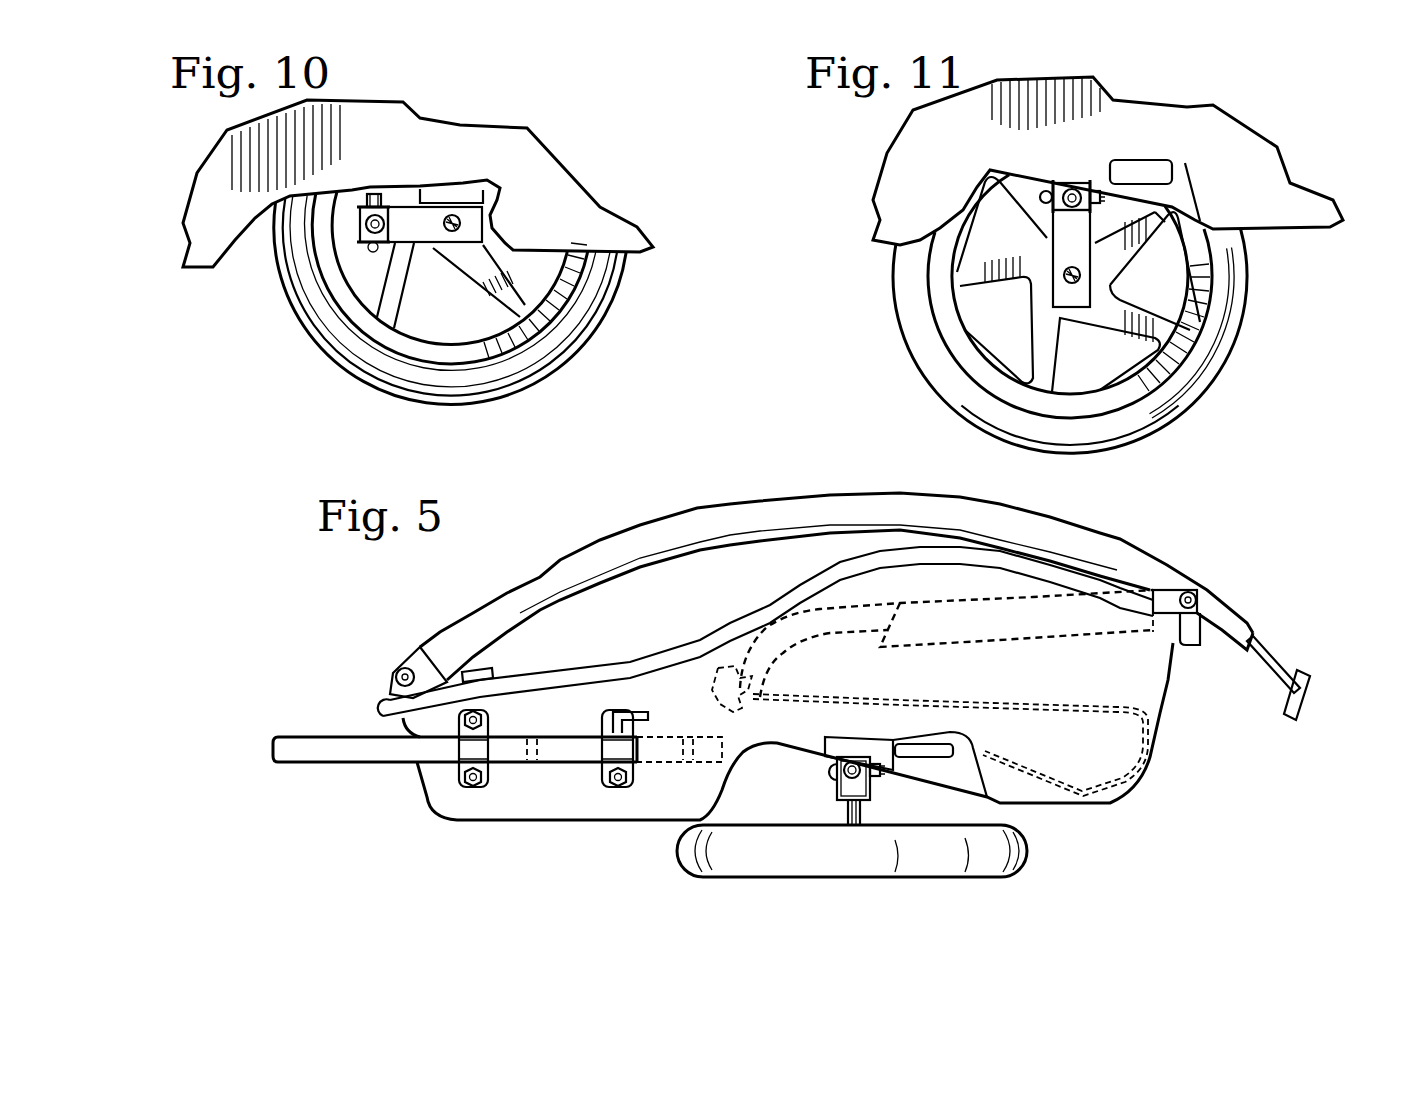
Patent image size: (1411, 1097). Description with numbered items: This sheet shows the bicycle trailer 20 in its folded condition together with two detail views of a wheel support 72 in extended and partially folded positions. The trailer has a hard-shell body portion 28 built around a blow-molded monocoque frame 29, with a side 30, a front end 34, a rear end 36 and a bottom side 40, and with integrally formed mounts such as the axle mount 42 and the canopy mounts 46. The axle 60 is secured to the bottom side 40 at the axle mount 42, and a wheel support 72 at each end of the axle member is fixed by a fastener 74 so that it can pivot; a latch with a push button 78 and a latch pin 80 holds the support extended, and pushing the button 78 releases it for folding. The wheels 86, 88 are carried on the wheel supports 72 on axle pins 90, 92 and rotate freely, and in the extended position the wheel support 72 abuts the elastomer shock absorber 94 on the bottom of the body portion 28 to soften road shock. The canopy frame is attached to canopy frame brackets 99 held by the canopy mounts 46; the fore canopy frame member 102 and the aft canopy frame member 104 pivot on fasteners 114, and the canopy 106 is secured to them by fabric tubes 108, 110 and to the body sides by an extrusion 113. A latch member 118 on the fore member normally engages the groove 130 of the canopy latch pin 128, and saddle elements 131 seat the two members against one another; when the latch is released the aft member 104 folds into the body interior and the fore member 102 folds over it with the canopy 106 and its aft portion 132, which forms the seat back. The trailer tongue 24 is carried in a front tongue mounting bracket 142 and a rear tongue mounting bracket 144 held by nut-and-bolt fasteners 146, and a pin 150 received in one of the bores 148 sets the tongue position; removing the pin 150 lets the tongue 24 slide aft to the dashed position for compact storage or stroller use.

In FIG. 5, the bicycle trailer 20 is at (1250, 512).
In FIG. 5, the trailer tongue 24 is at (307, 764).
In FIG. 5, the body portion 28 is at (1203, 752).
In FIG. 5, the monocoque frame 29 is at (1120, 790).
In FIG. 5, the side 30 is at (1150, 665).
In FIG. 5, the front end 34 is at (415, 768).
In FIG. 5, the rear end 36 is at (1163, 710).
In FIG. 10, the bottom side 40 is at (630, 250).
In FIG. 11, the bottom side 40 is at (1262, 232).
In FIG. 5, the bottom side 40 is at (1050, 805).
In FIG. 5, the axle mount 42 is at (840, 737).
In FIG. 5, the canopy mount 46 is at (388, 700).
In FIG. 5, the axle 60 is at (762, 778).
In FIG. 10, the wheel support 72 is at (427, 235).
In FIG. 11, the wheel support 72 is at (1078, 258).
In FIG. 5, the wheel support 72 is at (838, 775).
In FIG. 10, the fastener 74 is at (374, 193).
In FIG. 11, the fastener 74 is at (1045, 193).
In FIG. 10, the push button 78 is at (383, 222).
In FIG. 11, the push button 78 is at (1075, 195).
In FIG. 5, the push button 78 is at (857, 762).
In FIG. 5, the latch pin 80 is at (868, 790).
In FIG. 5, the wheel 86 is at (838, 878).
In FIG. 10, the wheel 88 is at (575, 358).
In FIG. 11, the wheel 88 is at (1225, 362).
In FIG. 5, the axle pin 90 is at (848, 812).
In FIG. 10, the axle pin 92 is at (460, 222).
In FIG. 11, the axle pin 92 is at (1068, 283).
In FIG. 10, the shock absorber 94 is at (455, 192).
In FIG. 11, the shock absorber 94 is at (1140, 175).
In FIG. 5, the shock absorber 94 is at (925, 760).
In FIG. 5, the canopy frame bracket 99 is at (395, 672).
In FIG. 5, the fore canopy frame member 102 is at (420, 648).
In FIG. 5, the aft canopy frame member 104 is at (1163, 590).
In FIG. 5, the canopy 106 is at (785, 583).
In FIG. 5, the fabric tube 108 is at (827, 493).
In FIG. 5, the fabric tube 110 is at (578, 527).
In FIG. 5, the extrusion 113 is at (490, 672).
In FIG. 5, the fastener 114 is at (405, 668).
In FIG. 5, the latch member 118 is at (1313, 688).
In FIG. 5, the canopy latch pin 128 is at (718, 680).
In FIG. 5, the groove 130 is at (735, 688).
In FIG. 5, the saddle element 131 is at (730, 702).
In FIG. 5, the aft portion of canopy 132 is at (932, 708).
In FIG. 5, the front tongue mounting bracket 142 is at (490, 777).
In FIG. 5, the rear tongue mounting bracket 144 is at (612, 787).
In FIG. 5, the nut-and-bolt fastener 146 is at (460, 785).
In FIG. 5, the bore 148 is at (543, 752).
In FIG. 5, the pin 150 is at (620, 712).